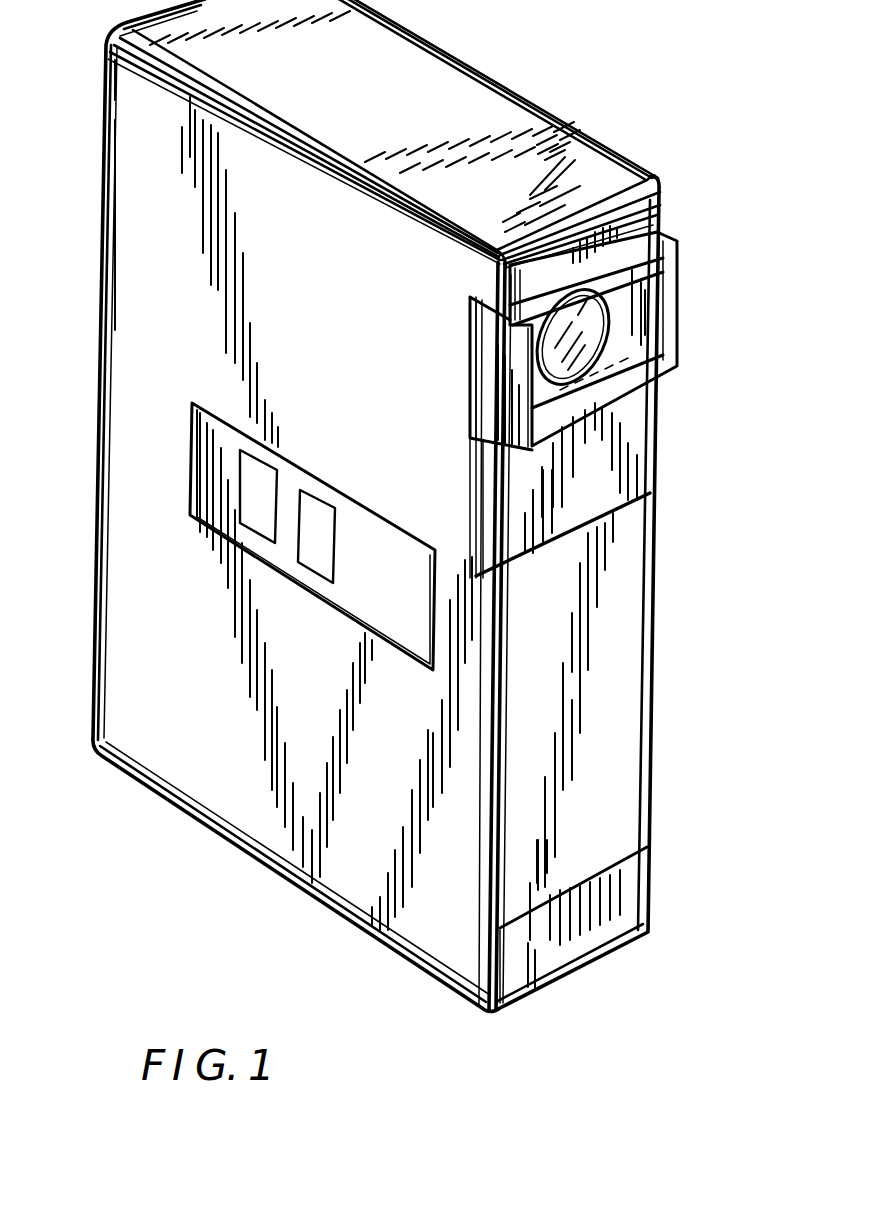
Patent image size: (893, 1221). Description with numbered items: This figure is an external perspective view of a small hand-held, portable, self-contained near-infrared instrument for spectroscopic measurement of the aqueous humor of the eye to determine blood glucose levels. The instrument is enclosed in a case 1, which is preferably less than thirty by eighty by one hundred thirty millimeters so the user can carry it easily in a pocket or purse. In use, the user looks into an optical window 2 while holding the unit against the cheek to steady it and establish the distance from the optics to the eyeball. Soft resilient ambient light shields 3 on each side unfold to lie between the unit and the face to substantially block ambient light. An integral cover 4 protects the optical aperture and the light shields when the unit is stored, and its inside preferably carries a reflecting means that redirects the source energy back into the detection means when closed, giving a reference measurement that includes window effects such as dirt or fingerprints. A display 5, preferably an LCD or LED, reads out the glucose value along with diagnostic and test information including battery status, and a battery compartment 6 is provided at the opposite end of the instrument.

The case 1 is at (653, 597).
The optical window 2 is at (605, 329).
The ambient light shields 3 is at (676, 276).
The cover 4 is at (633, 453).
The display 5 is at (192, 456).
The battery compartment 6 is at (651, 893).